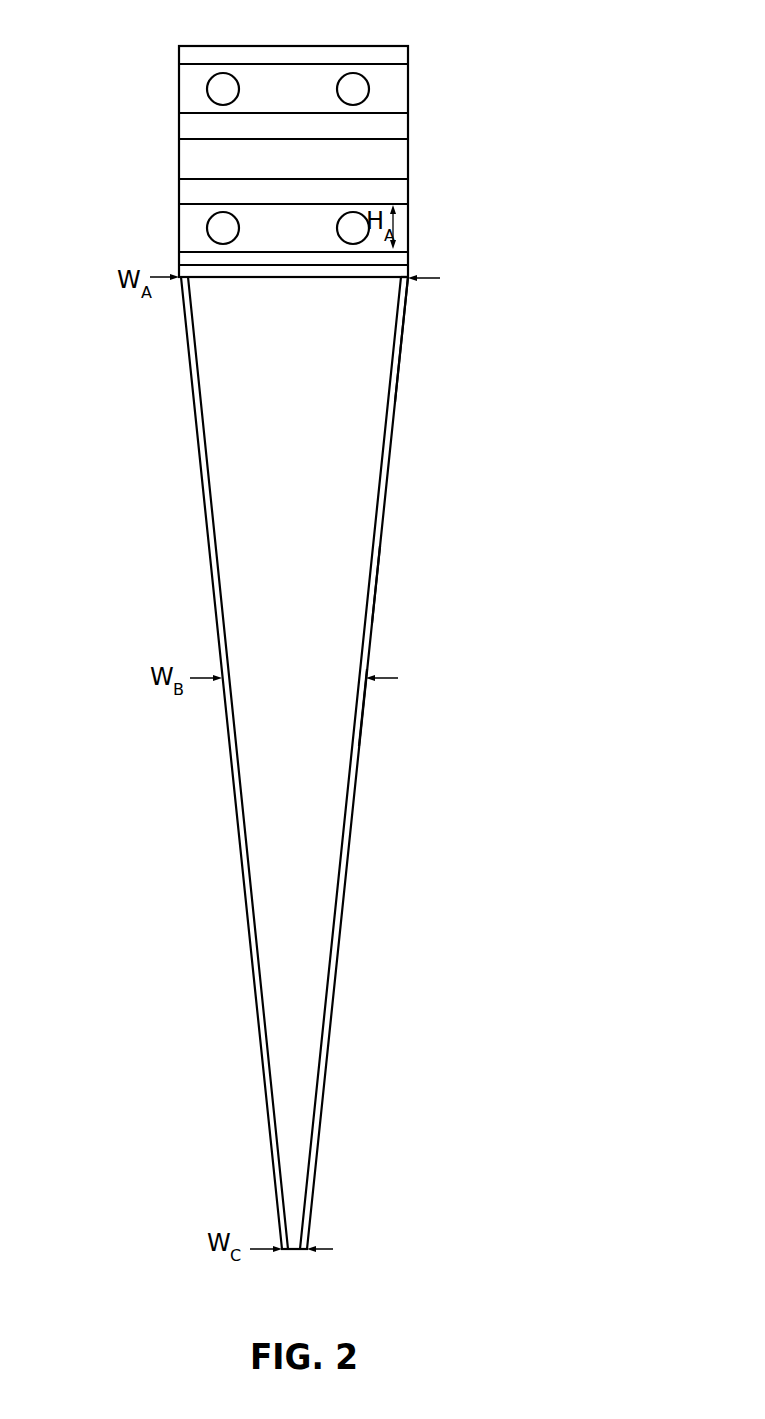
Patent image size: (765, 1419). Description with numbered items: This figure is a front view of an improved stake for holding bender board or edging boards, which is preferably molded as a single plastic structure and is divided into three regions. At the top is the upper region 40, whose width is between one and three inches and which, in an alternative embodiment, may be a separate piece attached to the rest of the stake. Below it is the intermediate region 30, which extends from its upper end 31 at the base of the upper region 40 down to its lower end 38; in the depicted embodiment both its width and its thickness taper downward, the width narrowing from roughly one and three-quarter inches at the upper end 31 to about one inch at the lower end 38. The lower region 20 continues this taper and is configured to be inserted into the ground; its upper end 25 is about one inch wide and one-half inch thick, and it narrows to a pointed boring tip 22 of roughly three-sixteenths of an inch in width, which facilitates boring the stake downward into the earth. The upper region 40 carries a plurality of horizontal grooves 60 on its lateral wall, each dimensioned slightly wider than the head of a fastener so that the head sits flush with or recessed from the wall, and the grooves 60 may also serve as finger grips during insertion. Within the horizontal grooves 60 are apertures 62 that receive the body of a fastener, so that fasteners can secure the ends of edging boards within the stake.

The lower region 20 is at (347, 880).
The boring tip 22 is at (298, 1250).
The upper end of the lower region 25 is at (370, 663).
The intermediate region 30 is at (390, 465).
The upper end of the intermediate region 31 is at (410, 282).
The lower end of the intermediate region 38 is at (370, 662).
The upper region 40 is at (397, 190).
The horizontal grooves 60 is at (192, 93).
The apertures 62 is at (220, 232).